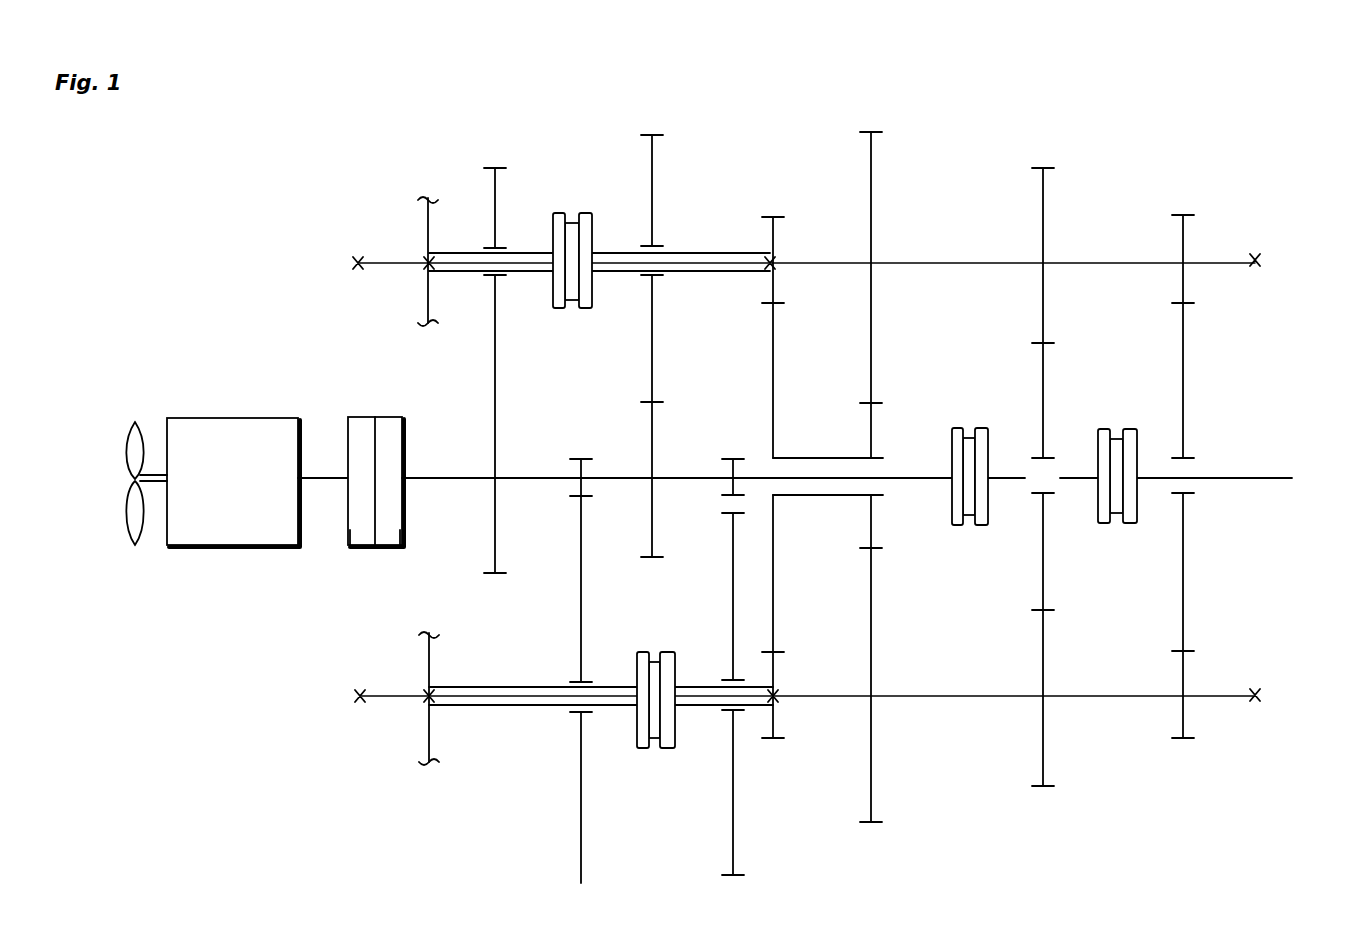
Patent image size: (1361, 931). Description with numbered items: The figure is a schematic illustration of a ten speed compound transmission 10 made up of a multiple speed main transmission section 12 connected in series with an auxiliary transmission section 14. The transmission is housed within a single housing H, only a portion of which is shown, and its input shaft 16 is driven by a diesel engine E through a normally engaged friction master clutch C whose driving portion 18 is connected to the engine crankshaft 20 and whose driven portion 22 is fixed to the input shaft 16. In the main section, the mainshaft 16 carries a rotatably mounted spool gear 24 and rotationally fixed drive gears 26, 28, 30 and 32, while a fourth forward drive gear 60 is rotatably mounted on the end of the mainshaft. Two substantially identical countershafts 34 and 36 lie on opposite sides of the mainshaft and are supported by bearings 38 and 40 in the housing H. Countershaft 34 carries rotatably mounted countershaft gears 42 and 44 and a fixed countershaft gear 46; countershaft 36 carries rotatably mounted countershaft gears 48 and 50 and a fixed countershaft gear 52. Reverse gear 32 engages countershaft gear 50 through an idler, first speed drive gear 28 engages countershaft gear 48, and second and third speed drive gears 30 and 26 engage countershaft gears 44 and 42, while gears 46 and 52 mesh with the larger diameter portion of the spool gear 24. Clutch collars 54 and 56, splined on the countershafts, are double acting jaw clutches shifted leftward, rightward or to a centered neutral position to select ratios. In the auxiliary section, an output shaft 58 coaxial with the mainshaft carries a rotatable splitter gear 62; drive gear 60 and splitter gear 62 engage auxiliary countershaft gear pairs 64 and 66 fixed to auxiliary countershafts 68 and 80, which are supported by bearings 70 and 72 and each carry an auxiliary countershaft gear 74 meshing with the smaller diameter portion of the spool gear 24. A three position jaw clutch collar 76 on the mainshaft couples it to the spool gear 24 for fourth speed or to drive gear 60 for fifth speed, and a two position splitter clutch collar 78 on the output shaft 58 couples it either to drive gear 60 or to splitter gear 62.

The compound transmission 10 is at (318, 766).
The main transmission section 12 is at (719, 122).
The auxiliary transmission section 14 is at (1131, 146).
The input shaft 16 is at (441, 478).
The driving portion 18 is at (366, 535).
The engine crankshaft 20 is at (324, 477).
The driven portion 22 is at (396, 535).
The spool gear 24 is at (871, 525).
The drive gear 26 is at (494, 535).
The drive gear 28 is at (580, 470).
The drive gear 30 is at (651, 540).
The drive gear 32 is at (732, 468).
The countershaft 34 is at (734, 273).
The countershaft 36 is at (500, 687).
The bearing 38 is at (428, 263).
The bearing 40 is at (429, 697).
The main section countershaft gear 42 is at (493, 190).
The main section countershaft gear 44 is at (652, 155).
The countershaft gear 46 is at (775, 232).
The main section countershaft gear 48 is at (580, 732).
The main section countershaft gear 50 is at (733, 810).
The countershaft gear 52 is at (775, 720).
The clutch collar 54 is at (560, 213).
The clutch collar 56 is at (643, 750).
The output shaft 58 is at (1236, 478).
The drive gear 60 is at (1040, 548).
The splitter gear 62 is at (1184, 568).
The auxiliary section countershaft gear pair 64 is at (1043, 180).
The auxiliary section countershaft gear pair 66 is at (1184, 288).
The auxiliary section countershaft 68 is at (1217, 261).
The bearing 70 is at (357, 263).
The bearing 72 is at (1258, 260).
The auxiliary section countershaft gear 74 is at (872, 290).
The clutch collar 76 is at (953, 428).
The splitter clutch collar 78 is at (1104, 428).
The auxiliary section countershaft 80 is at (1225, 696).
The engine E is at (233, 482).
The master clutch C is at (360, 405).
The housing H is at (428, 220).